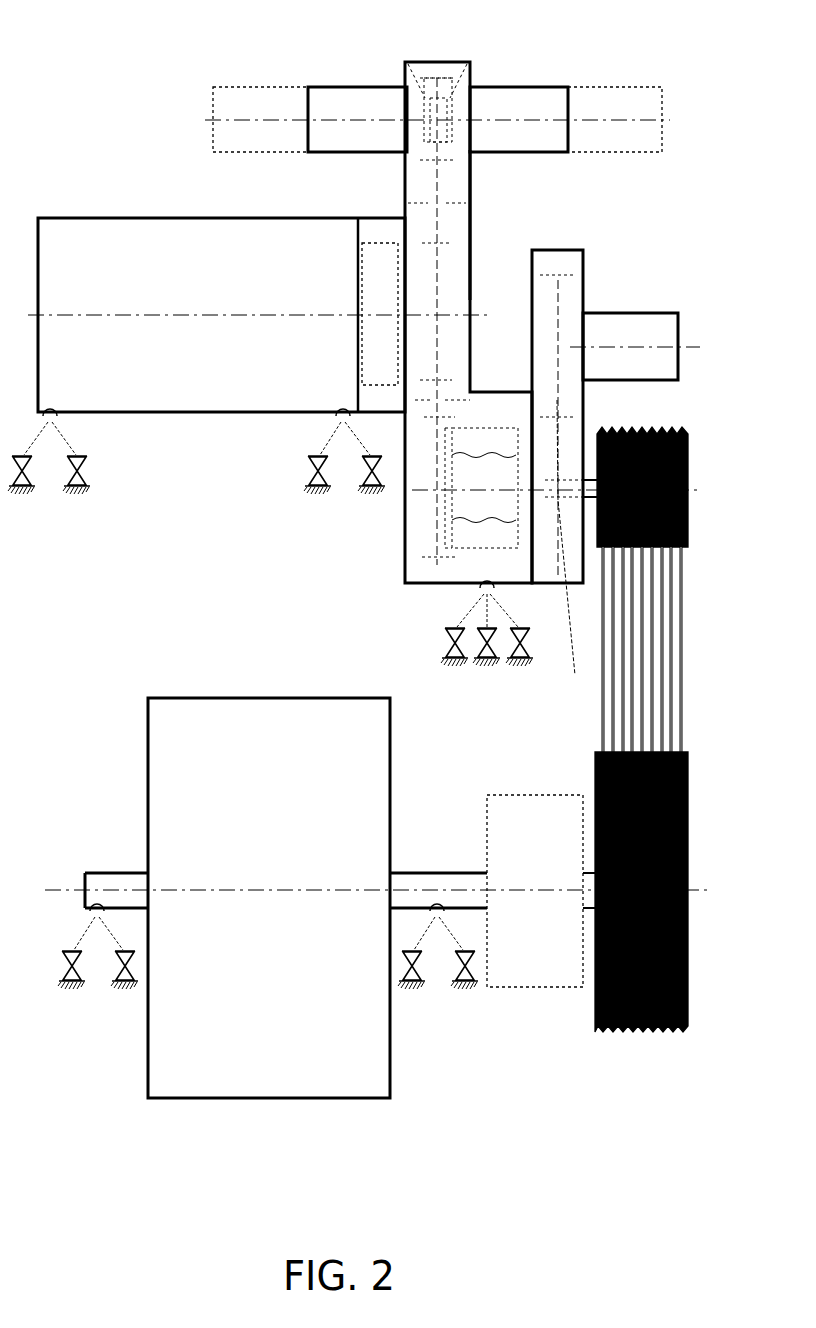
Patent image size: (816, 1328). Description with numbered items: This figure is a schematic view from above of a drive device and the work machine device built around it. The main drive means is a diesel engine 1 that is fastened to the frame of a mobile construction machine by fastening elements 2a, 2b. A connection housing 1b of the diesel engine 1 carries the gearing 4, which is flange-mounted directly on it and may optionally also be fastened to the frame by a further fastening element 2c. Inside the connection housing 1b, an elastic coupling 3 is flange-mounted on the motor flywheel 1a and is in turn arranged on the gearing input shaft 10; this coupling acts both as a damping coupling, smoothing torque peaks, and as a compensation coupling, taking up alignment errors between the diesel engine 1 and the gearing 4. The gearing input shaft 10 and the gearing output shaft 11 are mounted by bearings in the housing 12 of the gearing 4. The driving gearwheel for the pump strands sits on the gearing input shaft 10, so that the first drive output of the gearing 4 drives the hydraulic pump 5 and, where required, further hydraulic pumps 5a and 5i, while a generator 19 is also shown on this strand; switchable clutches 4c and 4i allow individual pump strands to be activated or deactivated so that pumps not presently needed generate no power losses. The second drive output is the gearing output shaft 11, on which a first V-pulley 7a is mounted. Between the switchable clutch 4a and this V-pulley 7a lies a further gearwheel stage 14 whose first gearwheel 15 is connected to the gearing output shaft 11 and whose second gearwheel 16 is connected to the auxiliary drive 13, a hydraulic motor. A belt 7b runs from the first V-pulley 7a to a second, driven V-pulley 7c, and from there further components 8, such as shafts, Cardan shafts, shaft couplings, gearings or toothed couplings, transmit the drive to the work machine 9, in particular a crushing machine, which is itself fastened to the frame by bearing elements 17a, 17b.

The main drive means/diesel engine 1 is at (221, 315).
The motor flywheel 1a is at (357, 250).
The connection housing 1b is at (376, 228).
The fastening element 2a is at (49, 473).
The fastening element 2b is at (344, 473).
The fastening element 2c is at (487, 646).
The elastic coupling 3 is at (380, 314).
The gearing 4 is at (468, 322).
The switchable clutch 4a is at (481, 488).
The switchable clutch 4c is at (428, 76).
The switchable clutch 4i is at (447, 74).
The hydraulic pump 5 is at (357, 119).
The hydraulic pump 5a is at (260, 119).
The hydraulic pump 5i is at (615, 119).
The V-pulley 7a is at (653, 428).
The belt 7b is at (662, 663).
The V-pulley 7c is at (690, 802).
The further components 8 is at (535, 891).
The work machine 9 is at (269, 898).
The gearing input shaft 10 is at (425, 305).
The gearing output shaft 11 is at (570, 556).
The housing 12 is at (472, 228).
The auxiliary drive/hydraulic motor 13 is at (630, 346).
The gearwheel stage 14 is at (574, 250).
The first gearwheel 15 is at (562, 440).
The second gearwheel 16 is at (557, 330).
The bearing element 17a is at (98, 969).
The bearing element 17b is at (438, 969).
The generator 19 is at (519, 119).